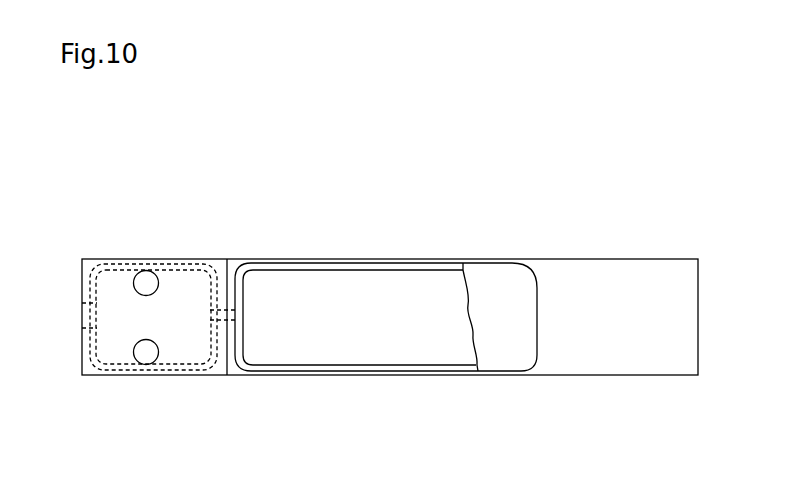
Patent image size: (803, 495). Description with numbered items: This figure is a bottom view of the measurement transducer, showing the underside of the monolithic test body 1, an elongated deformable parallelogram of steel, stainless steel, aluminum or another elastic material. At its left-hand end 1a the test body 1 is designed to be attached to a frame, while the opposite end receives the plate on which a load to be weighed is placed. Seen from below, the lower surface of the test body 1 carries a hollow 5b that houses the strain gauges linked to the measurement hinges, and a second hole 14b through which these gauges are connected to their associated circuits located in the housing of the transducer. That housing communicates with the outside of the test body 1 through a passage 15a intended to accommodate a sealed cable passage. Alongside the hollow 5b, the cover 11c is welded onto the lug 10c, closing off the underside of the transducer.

The test body 1 is at (238, 368).
The end of test body 1a is at (163, 263).
The hollow 5b is at (453, 331).
The lug 10c is at (443, 268).
The cover 11c is at (510, 288).
The second hole 14b is at (236, 310).
The passage 15a is at (88, 322).